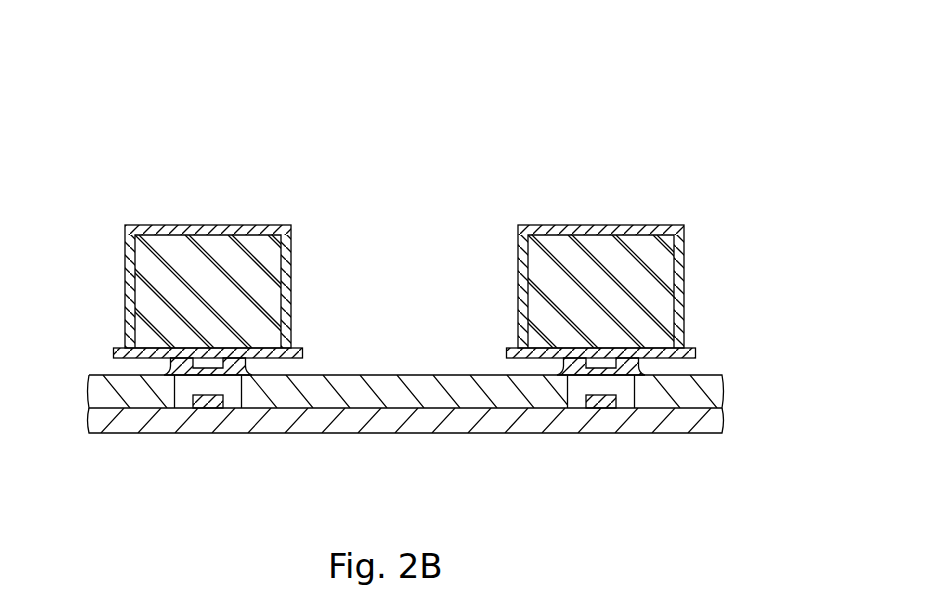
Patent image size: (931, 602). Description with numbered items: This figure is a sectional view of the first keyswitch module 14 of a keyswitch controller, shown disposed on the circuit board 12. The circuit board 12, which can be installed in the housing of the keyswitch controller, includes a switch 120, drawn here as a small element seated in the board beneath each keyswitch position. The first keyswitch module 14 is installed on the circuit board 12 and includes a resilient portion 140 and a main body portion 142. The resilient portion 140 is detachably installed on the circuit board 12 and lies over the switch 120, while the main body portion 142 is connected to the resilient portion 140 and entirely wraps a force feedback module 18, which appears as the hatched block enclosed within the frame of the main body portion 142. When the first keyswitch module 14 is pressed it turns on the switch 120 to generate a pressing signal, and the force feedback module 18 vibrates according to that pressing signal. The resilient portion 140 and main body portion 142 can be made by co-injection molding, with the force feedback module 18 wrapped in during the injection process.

The circuit board 12 is at (128, 422).
The switch 120 is at (207, 403).
The first keyswitch module 14 is at (303, 190).
The resilient portion 140 is at (107, 382).
The main body portion 142 is at (165, 225).
The force feedback module 18 is at (157, 268).